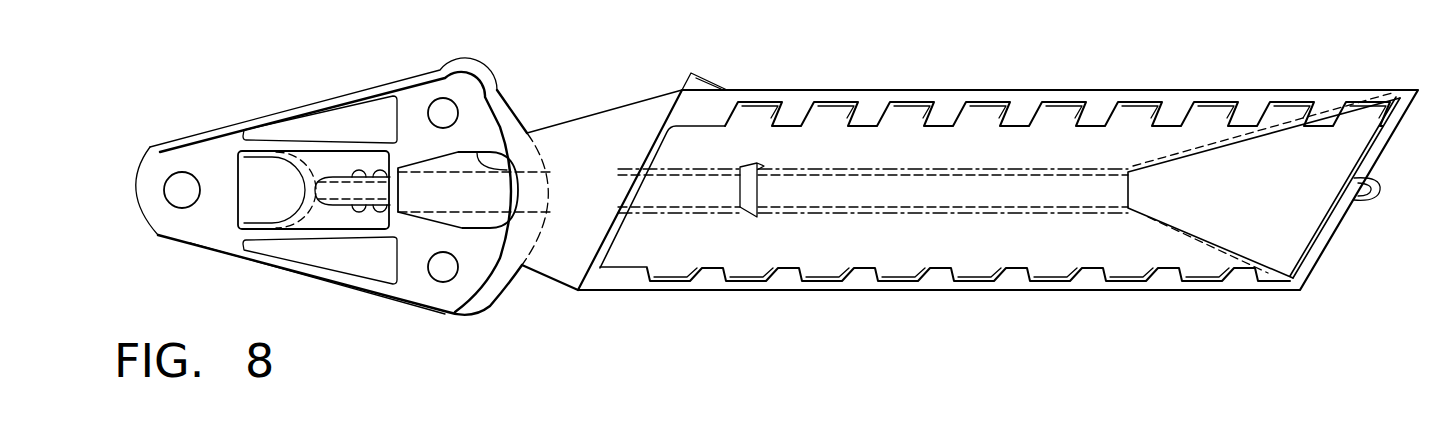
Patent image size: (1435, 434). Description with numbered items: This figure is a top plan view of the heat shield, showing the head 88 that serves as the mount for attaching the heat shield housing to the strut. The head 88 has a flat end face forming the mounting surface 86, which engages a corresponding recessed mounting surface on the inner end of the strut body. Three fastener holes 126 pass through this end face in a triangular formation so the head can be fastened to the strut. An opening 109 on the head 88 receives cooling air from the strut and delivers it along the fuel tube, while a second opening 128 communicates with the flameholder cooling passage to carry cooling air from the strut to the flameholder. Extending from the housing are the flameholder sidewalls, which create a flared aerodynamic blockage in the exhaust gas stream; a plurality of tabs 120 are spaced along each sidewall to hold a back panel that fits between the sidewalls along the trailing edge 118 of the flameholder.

The head 88 is at (186, 140).
The opening 109 is at (324, 160).
The fastener holes 126 is at (185, 188).
The mounting surface 86 is at (437, 154).
The second opening 128 is at (500, 166).
The tabs 120 is at (1013, 128).
The trailing edge 118 is at (1342, 222).